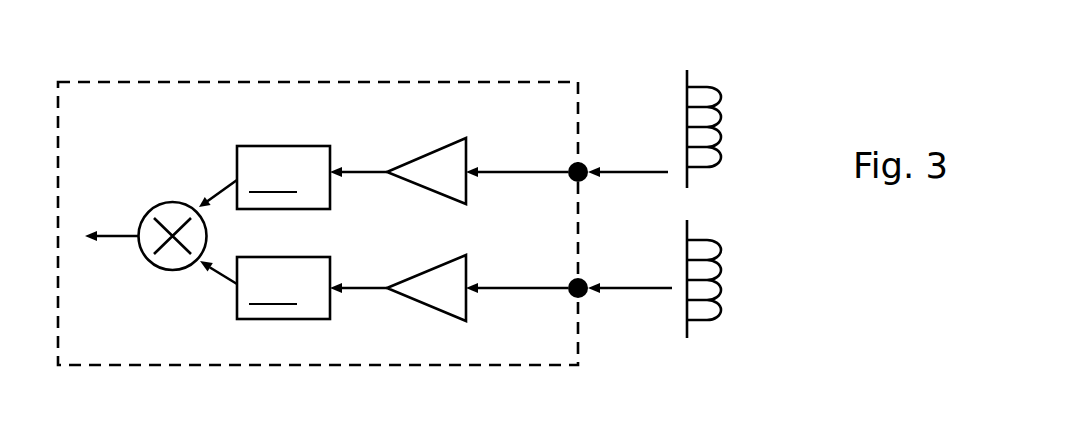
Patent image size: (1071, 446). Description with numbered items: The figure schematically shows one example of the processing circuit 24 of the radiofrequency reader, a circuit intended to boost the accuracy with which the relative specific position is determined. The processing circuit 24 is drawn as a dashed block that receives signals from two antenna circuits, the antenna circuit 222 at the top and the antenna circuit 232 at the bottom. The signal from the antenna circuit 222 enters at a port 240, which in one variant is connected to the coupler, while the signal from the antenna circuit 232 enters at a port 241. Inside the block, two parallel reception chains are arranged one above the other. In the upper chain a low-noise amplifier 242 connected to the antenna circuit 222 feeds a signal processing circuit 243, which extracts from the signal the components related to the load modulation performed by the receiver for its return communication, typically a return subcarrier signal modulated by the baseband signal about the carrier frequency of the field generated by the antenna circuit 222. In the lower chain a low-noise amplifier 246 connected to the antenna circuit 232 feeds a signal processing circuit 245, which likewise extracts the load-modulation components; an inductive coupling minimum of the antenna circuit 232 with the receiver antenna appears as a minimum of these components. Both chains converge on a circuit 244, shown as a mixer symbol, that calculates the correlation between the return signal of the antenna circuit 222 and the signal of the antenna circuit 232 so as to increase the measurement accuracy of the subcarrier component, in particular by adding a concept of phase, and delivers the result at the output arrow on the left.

The processing circuit 24 is at (318, 80).
The antenna circuit 222 is at (737, 110).
The antenna circuit 232 is at (737, 281).
The port 240 is at (583, 166).
The port 241 is at (584, 296).
The low-noise amplifier 242 is at (430, 188).
The signal processing circuit 243 is at (264, 177).
The correlation calculating circuit 244 is at (147, 272).
The signal processing circuit 245 is at (265, 288).
The low-noise amplifier 246 is at (428, 305).